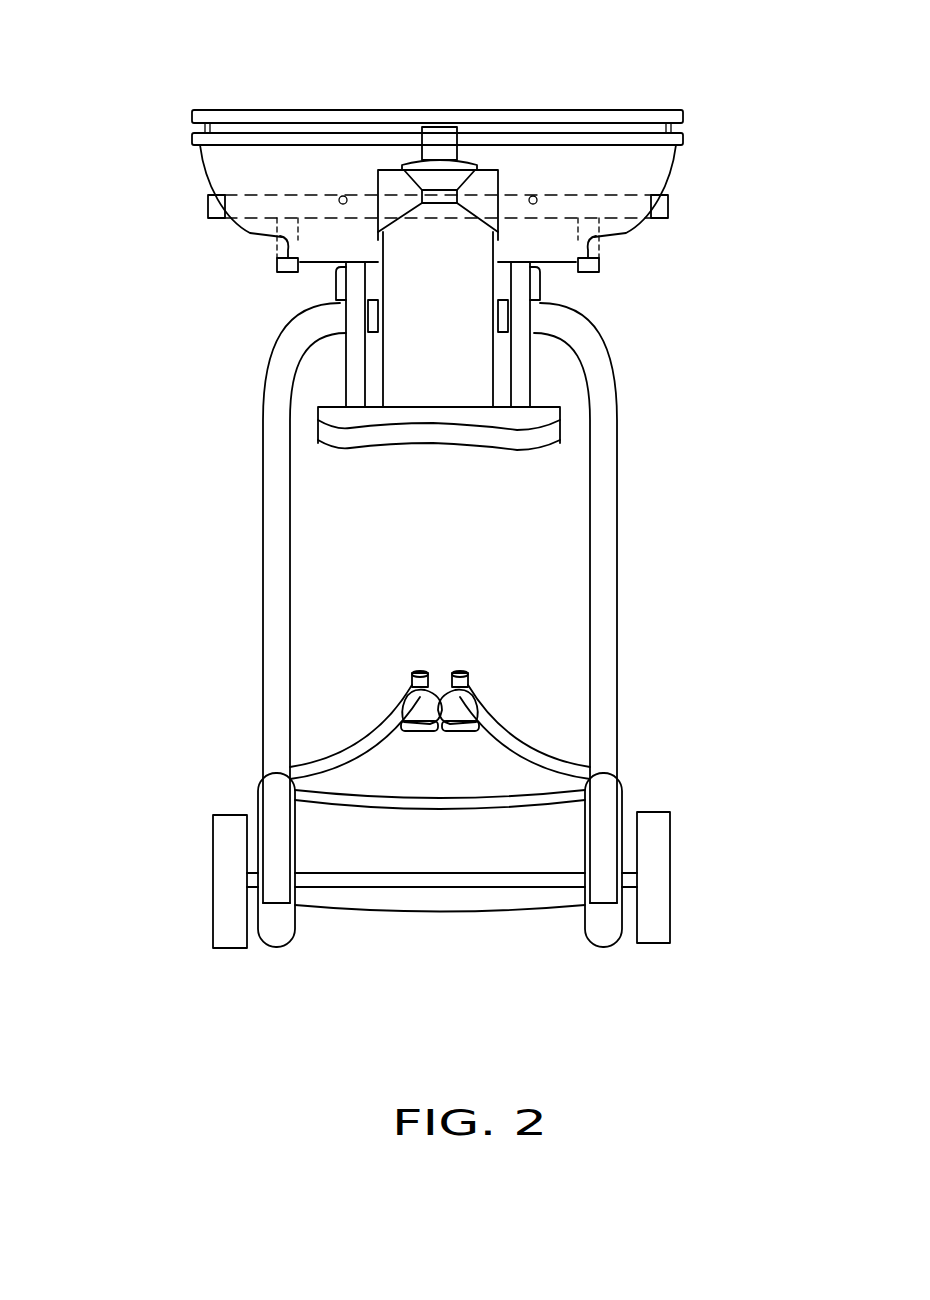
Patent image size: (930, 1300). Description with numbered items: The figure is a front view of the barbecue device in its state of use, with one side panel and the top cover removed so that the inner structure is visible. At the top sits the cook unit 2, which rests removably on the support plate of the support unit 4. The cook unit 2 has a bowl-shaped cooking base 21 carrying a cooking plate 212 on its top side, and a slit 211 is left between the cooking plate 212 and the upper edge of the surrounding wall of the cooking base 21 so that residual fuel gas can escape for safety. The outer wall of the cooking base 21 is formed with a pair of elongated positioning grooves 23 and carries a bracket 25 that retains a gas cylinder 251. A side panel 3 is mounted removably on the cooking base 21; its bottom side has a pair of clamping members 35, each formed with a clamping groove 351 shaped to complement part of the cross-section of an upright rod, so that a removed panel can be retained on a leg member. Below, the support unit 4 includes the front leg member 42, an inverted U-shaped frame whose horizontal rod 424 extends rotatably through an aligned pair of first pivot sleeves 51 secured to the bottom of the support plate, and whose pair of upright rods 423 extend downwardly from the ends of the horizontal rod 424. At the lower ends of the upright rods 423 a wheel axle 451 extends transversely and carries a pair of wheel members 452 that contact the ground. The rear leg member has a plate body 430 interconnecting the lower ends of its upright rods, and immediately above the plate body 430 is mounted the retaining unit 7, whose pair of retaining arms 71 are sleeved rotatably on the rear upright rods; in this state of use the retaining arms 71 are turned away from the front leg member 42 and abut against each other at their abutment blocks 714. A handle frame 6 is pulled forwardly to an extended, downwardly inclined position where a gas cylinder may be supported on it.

The cook unit 2 is at (672, 163).
The cooking base 21 is at (667, 173).
The slit 211 is at (243, 124).
The cooking plate 212 is at (277, 122).
The positioning grooves 23 is at (280, 240).
The bracket 25 is at (381, 170).
The gas cylinder 251 is at (457, 373).
The side panel 3 is at (667, 208).
The clamping members 35 is at (273, 270).
The clamping groove 351 is at (637, 219).
The support unit 4 is at (606, 357).
The front leg member 42 is at (263, 600).
The upright rods 423 is at (275, 542).
The horizontal rod 424 is at (368, 332).
The plate body 430 is at (497, 838).
The wheel axle 451 is at (438, 882).
The wheel members 452 is at (227, 910).
The first pivot sleeves 51 is at (368, 317).
The handle frame 6 is at (520, 447).
The retaining unit 7 is at (468, 670).
The retaining arms 71 is at (362, 748).
The abutment block 714 is at (415, 703).